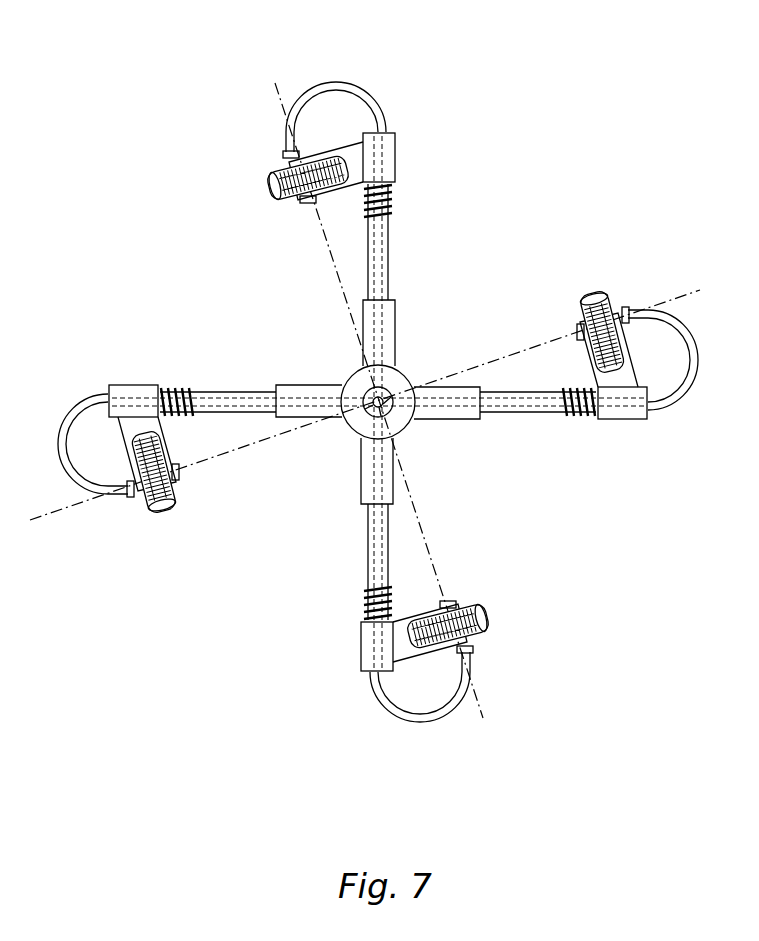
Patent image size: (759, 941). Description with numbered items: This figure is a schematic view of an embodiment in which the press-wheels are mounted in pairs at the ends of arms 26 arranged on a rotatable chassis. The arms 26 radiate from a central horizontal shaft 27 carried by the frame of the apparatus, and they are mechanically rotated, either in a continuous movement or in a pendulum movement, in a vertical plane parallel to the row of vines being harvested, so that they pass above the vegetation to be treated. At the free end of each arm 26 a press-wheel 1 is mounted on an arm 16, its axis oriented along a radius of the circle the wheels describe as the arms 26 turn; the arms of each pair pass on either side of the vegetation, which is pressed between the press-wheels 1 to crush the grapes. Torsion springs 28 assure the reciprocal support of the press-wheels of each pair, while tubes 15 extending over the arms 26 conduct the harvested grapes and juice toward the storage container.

The press-wheel 1 is at (275, 172).
The tube 15 is at (322, 88).
The arm 16 is at (345, 132).
The arm 26 is at (388, 247).
The horizontal shaft 27 is at (387, 390).
The torsion spring 28 is at (392, 200).